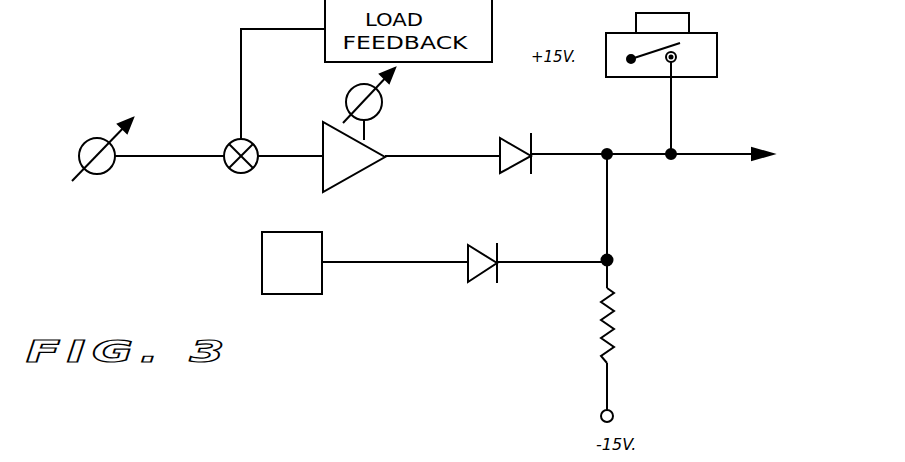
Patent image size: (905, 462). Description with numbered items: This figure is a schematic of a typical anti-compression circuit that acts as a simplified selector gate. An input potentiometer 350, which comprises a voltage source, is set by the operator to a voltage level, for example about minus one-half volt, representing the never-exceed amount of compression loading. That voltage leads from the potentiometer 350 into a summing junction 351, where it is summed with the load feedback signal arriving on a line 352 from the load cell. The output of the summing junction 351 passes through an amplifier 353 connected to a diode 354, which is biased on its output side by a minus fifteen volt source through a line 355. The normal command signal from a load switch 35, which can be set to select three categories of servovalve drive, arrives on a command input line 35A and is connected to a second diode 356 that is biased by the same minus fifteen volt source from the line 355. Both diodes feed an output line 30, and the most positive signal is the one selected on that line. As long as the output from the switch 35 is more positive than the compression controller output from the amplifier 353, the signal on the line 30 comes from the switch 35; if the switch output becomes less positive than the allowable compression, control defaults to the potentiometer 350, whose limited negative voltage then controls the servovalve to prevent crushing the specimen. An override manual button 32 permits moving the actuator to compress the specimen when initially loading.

The input potentiometer 350 is at (82, 138).
The summing junction 351 is at (232, 173).
The load feedback line 352 is at (239, 90).
The amplifier 353 is at (367, 168).
The diode 354 is at (513, 138).
The bias line 355 is at (607, 224).
The diode 356 is at (483, 272).
The load switch 35 is at (297, 232).
The command input line 35A is at (393, 268).
The output line 30 is at (715, 153).
The override manual button 32 is at (718, 47).